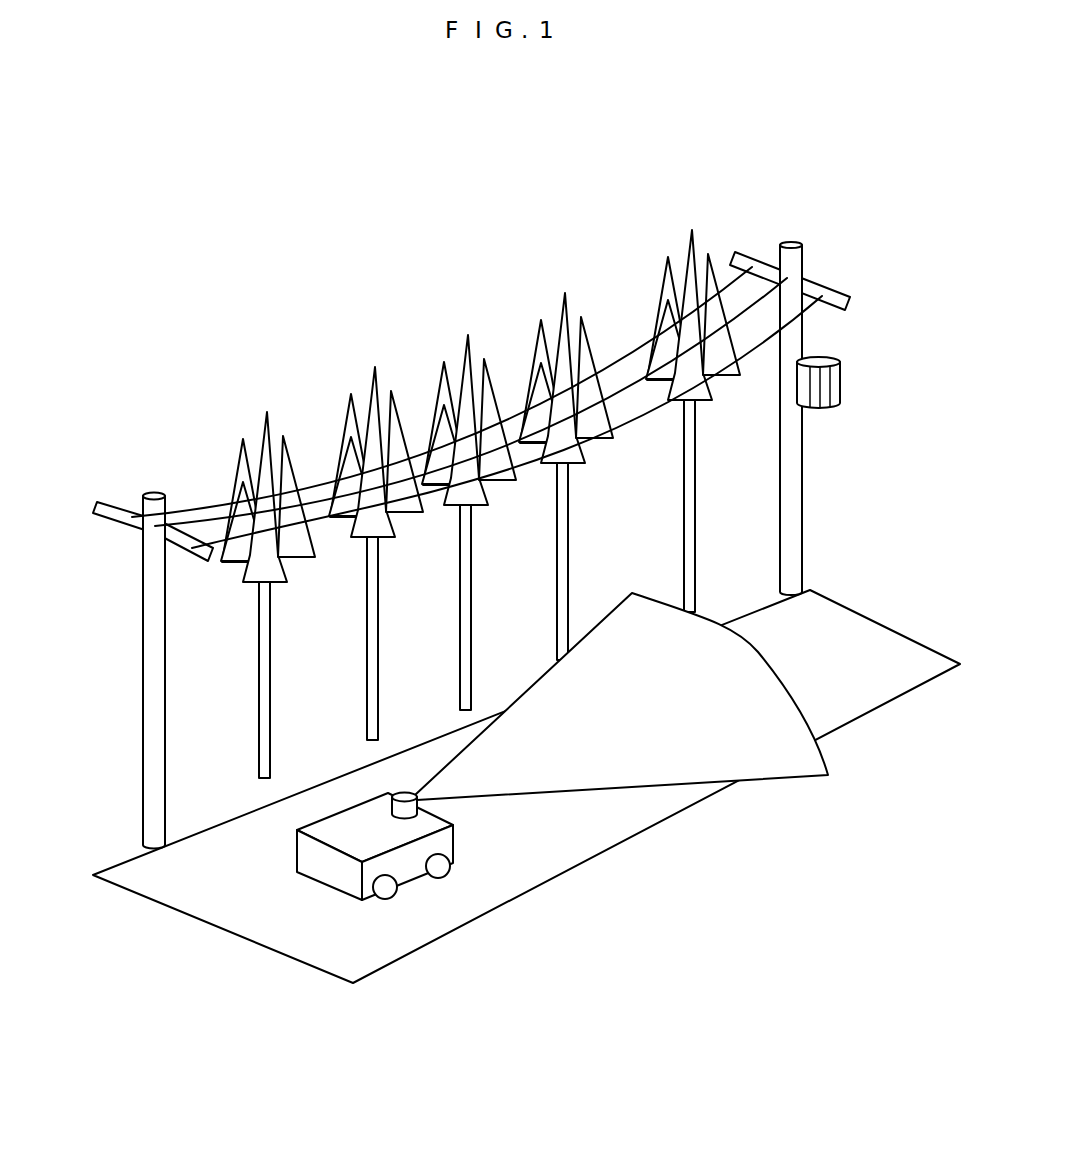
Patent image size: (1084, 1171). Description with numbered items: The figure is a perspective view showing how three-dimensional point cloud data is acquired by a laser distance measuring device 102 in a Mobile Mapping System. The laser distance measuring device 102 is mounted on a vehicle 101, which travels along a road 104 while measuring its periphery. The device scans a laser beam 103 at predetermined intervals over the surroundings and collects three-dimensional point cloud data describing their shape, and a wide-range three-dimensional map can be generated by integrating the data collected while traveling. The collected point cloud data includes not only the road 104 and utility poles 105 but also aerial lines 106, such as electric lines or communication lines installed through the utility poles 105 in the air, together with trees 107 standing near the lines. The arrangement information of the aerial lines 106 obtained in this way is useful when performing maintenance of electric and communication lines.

The vehicle 101 is at (402, 878).
The laser distance measuring device 102 is at (393, 797).
The laser beam 103 is at (805, 770).
The road 104 is at (635, 827).
The utility pole 105 is at (785, 240).
The aerial line 106 is at (640, 347).
The tree 107 is at (263, 445).